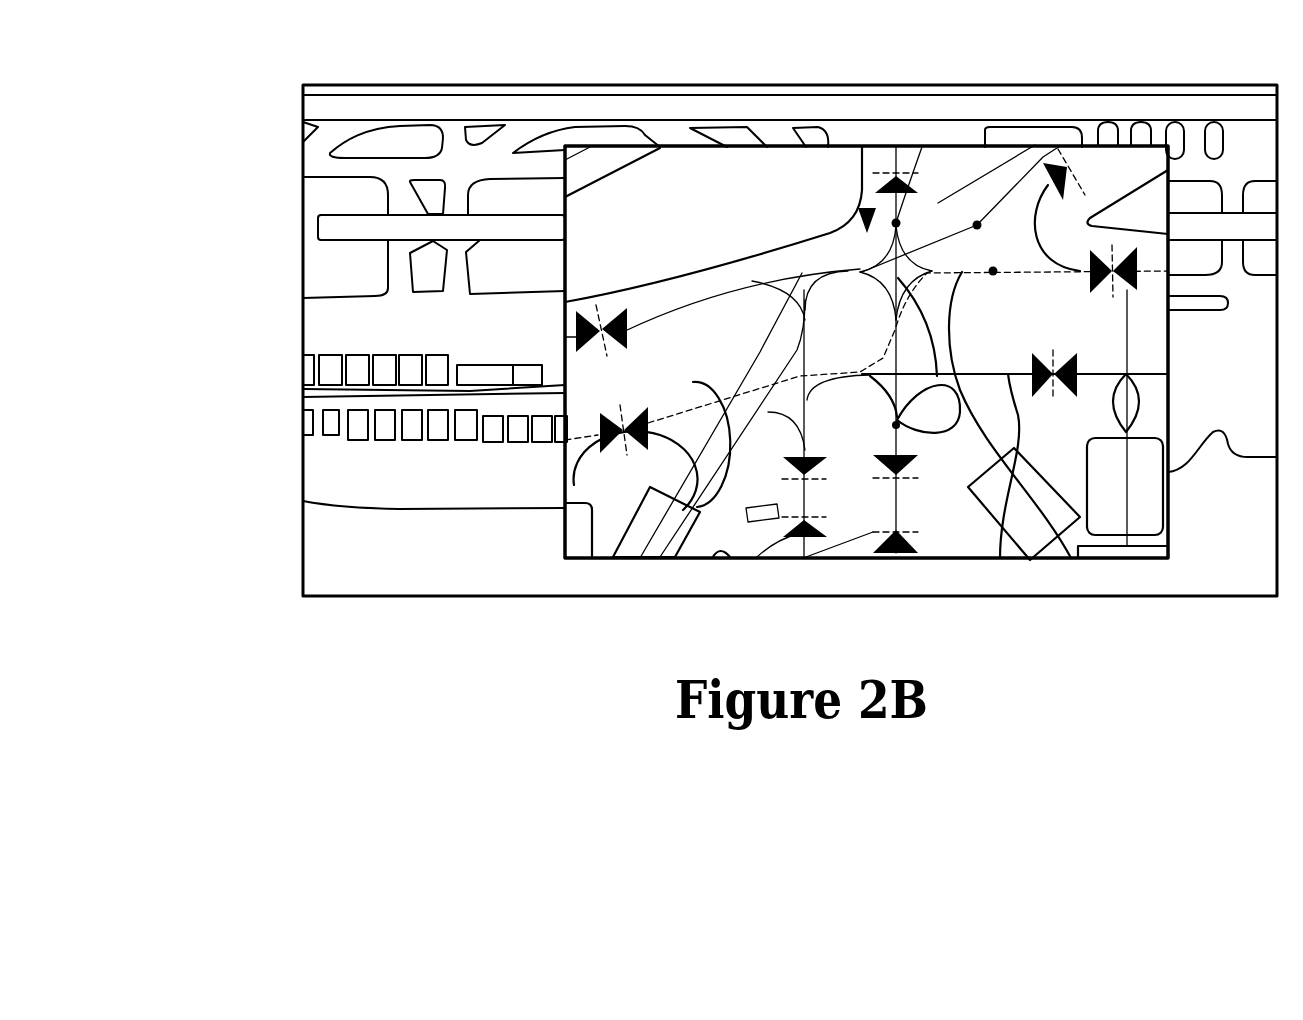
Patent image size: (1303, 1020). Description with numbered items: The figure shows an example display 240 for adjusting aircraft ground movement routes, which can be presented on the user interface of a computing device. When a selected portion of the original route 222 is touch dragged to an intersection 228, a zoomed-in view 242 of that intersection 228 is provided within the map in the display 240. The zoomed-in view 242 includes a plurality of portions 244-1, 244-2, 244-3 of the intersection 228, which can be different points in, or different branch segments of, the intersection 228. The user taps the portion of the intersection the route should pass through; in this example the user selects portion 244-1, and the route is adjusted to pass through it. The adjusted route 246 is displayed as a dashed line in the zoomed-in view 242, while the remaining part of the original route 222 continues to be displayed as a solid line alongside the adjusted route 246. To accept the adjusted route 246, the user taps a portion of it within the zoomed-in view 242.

The display 240 is at (274, 86).
The zoomed-in view 242 is at (630, 146).
The intersection 228 is at (866, 208).
The portion of intersection 244-3 is at (938, 203).
The portion of intersection 244-2 is at (977, 225).
The portion of intersection 244-1 is at (993, 271).
The adjusted route 246 is at (1000, 558).
The original route 222 is at (1071, 558).